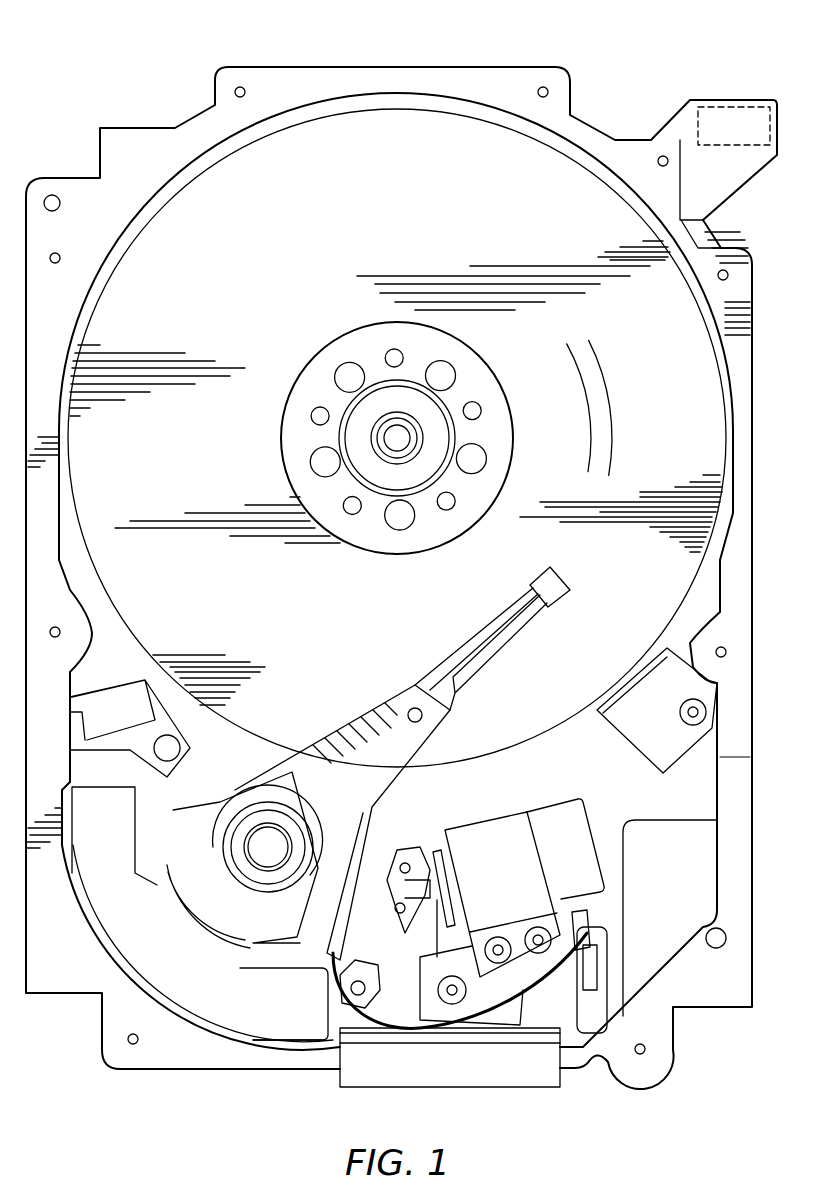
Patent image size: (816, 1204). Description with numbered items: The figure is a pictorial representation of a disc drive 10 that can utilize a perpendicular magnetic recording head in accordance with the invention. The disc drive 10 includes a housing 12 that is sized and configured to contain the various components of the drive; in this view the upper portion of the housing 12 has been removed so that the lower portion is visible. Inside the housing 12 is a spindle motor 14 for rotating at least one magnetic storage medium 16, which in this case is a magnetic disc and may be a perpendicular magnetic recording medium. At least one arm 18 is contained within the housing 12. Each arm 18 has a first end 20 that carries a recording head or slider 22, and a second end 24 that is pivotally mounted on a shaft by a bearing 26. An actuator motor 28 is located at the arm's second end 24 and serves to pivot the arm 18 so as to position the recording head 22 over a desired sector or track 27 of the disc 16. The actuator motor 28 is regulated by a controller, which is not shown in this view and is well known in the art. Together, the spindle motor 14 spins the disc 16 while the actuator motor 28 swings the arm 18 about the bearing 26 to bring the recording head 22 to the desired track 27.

The disc drive 10 is at (80, 112).
The housing 12 is at (524, 78).
The spindle motor 14 is at (390, 442).
The magnetic storage medium 16 is at (312, 239).
The arm 18 is at (380, 730).
The first end 20 is at (493, 615).
The recording head 22 is at (556, 584).
The second end 24 is at (293, 785).
The bearing 26 is at (260, 837).
The track 27 is at (600, 414).
The actuator motor 28 is at (169, 967).